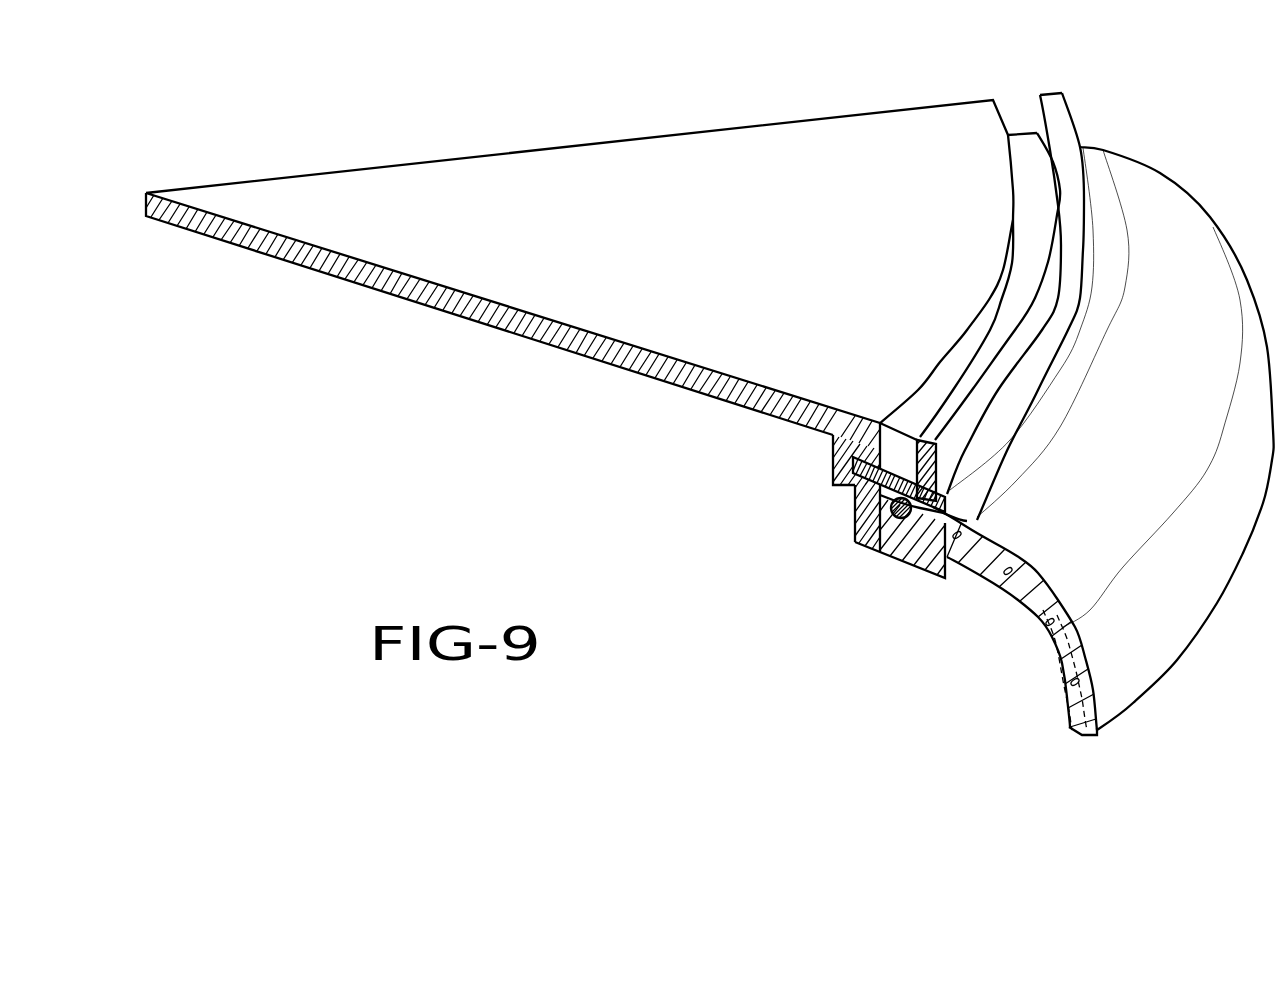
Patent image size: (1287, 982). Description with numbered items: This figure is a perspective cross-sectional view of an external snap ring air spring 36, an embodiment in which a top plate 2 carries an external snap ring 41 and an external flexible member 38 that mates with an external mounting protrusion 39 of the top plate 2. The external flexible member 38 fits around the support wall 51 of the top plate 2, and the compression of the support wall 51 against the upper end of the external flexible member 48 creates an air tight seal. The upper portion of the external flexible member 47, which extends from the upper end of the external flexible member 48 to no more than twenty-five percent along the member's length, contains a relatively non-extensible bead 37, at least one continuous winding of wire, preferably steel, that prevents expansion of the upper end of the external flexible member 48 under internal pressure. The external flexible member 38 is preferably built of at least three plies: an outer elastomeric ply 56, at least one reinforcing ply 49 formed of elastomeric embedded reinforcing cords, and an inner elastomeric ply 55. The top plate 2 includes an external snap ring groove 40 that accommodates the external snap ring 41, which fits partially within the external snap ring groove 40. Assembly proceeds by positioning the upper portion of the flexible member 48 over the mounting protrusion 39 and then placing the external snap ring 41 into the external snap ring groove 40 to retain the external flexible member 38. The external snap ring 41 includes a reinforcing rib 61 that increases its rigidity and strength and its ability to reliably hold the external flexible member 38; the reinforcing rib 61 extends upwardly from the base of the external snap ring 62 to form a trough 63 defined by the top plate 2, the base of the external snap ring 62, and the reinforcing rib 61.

The top plate 2 is at (684, 378).
The external snap ring air spring 36 is at (741, 520).
The relatively non-extensible bead 37 is at (858, 546).
The external flexible member 38 is at (1067, 700).
The external mounting protrusion 39 is at (897, 556).
The external snap ring groove 40 is at (856, 456).
The external snap ring 41 is at (975, 437).
The upper portion of the external flexible member 47 is at (927, 540).
The upper end of the external flexible member 48 is at (885, 508).
The reinforcing ply 49 is at (1048, 622).
The support wall 51 is at (866, 507).
The inner elastomeric ply 55 is at (1063, 668).
The outer elastomeric ply 56 is at (1088, 689).
The reinforcing rib 61 is at (1068, 140).
The base of the external snap ring 62 is at (967, 521).
The trough 63 is at (1025, 147).